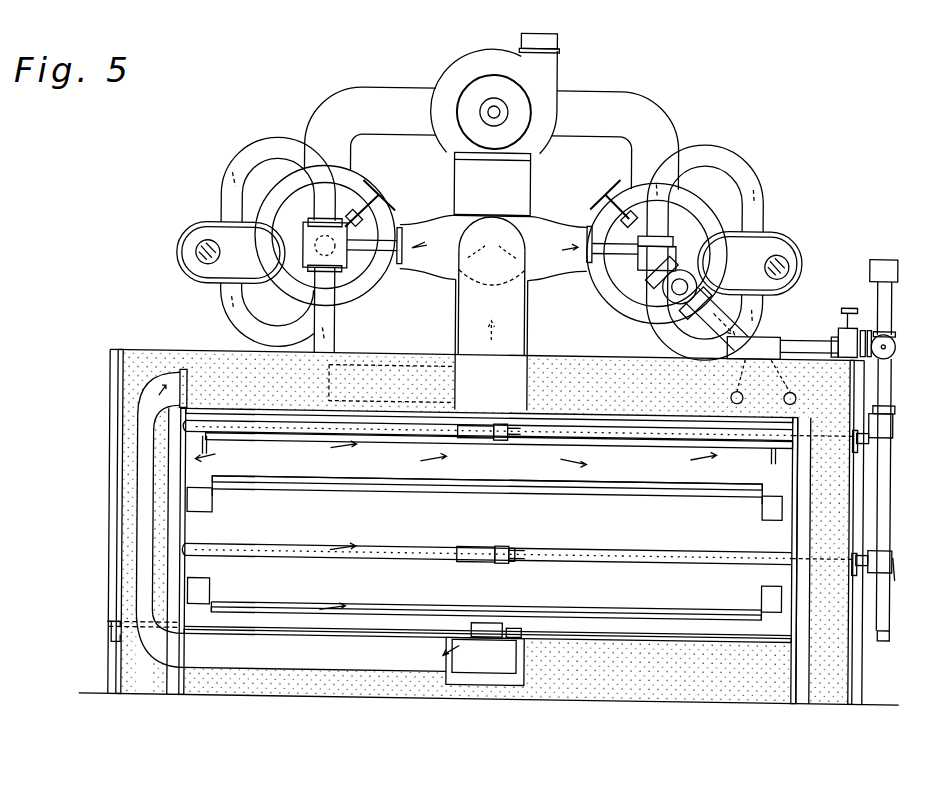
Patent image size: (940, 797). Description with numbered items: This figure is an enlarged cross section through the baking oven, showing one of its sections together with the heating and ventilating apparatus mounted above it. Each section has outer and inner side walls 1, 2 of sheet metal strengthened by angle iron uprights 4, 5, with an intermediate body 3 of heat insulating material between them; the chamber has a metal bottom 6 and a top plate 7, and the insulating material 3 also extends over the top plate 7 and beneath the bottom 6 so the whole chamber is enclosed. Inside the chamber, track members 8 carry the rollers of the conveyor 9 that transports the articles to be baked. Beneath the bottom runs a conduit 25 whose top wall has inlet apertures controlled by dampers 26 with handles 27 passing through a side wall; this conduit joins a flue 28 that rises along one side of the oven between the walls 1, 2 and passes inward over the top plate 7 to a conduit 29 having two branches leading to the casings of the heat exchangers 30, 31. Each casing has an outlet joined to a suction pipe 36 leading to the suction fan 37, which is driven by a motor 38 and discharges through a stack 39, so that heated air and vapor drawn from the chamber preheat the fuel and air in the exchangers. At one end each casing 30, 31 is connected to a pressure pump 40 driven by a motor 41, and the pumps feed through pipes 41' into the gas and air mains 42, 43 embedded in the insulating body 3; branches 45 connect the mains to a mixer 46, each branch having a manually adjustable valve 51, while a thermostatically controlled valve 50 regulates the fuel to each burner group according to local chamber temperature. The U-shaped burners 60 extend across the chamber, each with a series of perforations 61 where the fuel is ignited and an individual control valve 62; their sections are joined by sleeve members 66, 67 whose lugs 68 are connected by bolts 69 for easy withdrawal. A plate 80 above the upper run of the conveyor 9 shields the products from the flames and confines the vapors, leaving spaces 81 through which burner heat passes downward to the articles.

The outer side wall 1 is at (122, 540).
The inner side wall 2 is at (792, 546).
The intermediate body of heat insulating material 3 is at (130, 446).
The angle iron upright 4 is at (118, 580).
The angle iron upright 5 is at (118, 606).
The metal bottom 6 is at (640, 640).
The top plate 7 is at (544, 367).
The track member 8 is at (187, 496).
The conveyor 9 is at (444, 490).
The conduit 25 is at (505, 672).
The damper 26 is at (490, 627).
The damper handle 27 is at (110, 640).
The flue 28 is at (128, 518).
The conduit 29 is at (512, 308).
The heat exchanger 30 is at (296, 194).
The heat exchanger 31 is at (688, 198).
The suction pipe 36 is at (670, 131).
The suction fan 37 is at (543, 90).
The motor 38 is at (508, 96).
The stack 39 is at (556, 43).
The pressure pump 40 is at (187, 270).
The motor 41 is at (278, 233).
The pipe 41' is at (725, 252).
The main 42 is at (775, 338).
The main 43 is at (792, 388).
The branch 45 is at (796, 338).
The mixer 46 is at (885, 379).
The thermostatically controlled valve 50 is at (887, 309).
The manually adjustable valve 51 is at (856, 295).
The burner 60 is at (428, 436).
The perforations 61 is at (318, 434).
The valve 62 is at (892, 425).
The sleeve member 66 is at (518, 436).
The sleeve member 67 is at (472, 438).
The lug 68 is at (514, 548).
The bolt 69 is at (500, 440).
The plate 80 is at (660, 444).
The space 81 is at (250, 432).